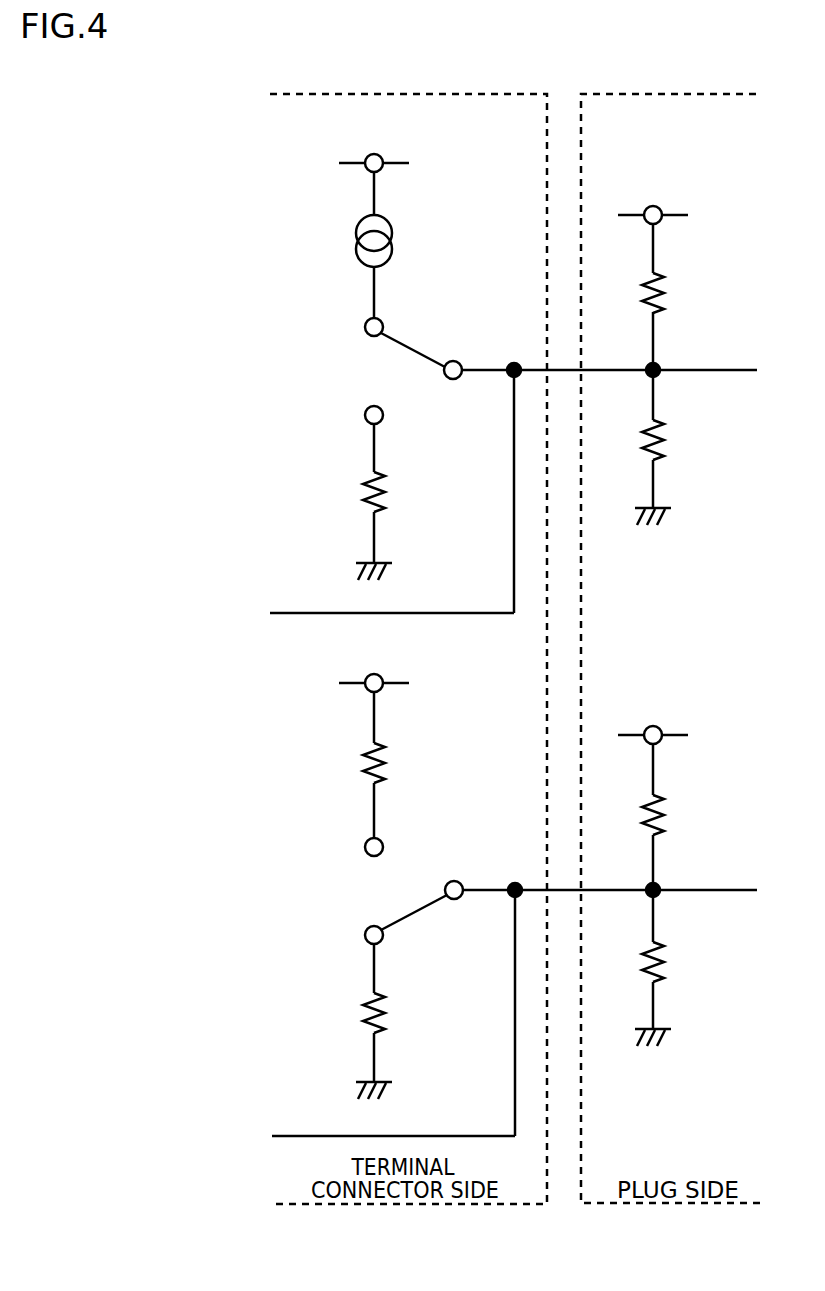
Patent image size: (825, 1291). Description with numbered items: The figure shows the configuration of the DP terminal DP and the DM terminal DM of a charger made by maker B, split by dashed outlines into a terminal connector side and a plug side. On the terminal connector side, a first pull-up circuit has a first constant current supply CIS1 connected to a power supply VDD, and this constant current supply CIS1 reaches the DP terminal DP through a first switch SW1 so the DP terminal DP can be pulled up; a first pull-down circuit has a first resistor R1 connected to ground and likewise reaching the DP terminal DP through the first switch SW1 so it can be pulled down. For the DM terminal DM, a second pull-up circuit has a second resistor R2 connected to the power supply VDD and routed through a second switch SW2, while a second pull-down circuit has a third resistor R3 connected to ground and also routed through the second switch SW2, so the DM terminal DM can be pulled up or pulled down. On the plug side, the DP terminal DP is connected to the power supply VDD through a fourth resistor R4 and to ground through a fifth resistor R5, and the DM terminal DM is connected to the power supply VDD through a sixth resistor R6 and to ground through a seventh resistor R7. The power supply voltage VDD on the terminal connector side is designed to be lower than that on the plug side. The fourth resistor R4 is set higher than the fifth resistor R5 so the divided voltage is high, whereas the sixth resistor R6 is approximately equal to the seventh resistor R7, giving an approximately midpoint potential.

The first constant current supply CIS1 is at (406, 245).
The first switch SW1 is at (410, 352).
The second switch SW2 is at (411, 910).
The first resistor R1 is at (389, 493).
The second resistor R2 is at (394, 774).
The third resistor R3 is at (391, 1021).
The fourth resistor R4 is at (672, 300).
The fifth resistor R5 is at (668, 447).
The sixth resistor R6 is at (672, 820).
The seventh resistor R7 is at (668, 968).
The DP terminal DP is at (513, 472).
The DM terminal DM is at (514, 994).
The power supply VDD is at (513, 435).